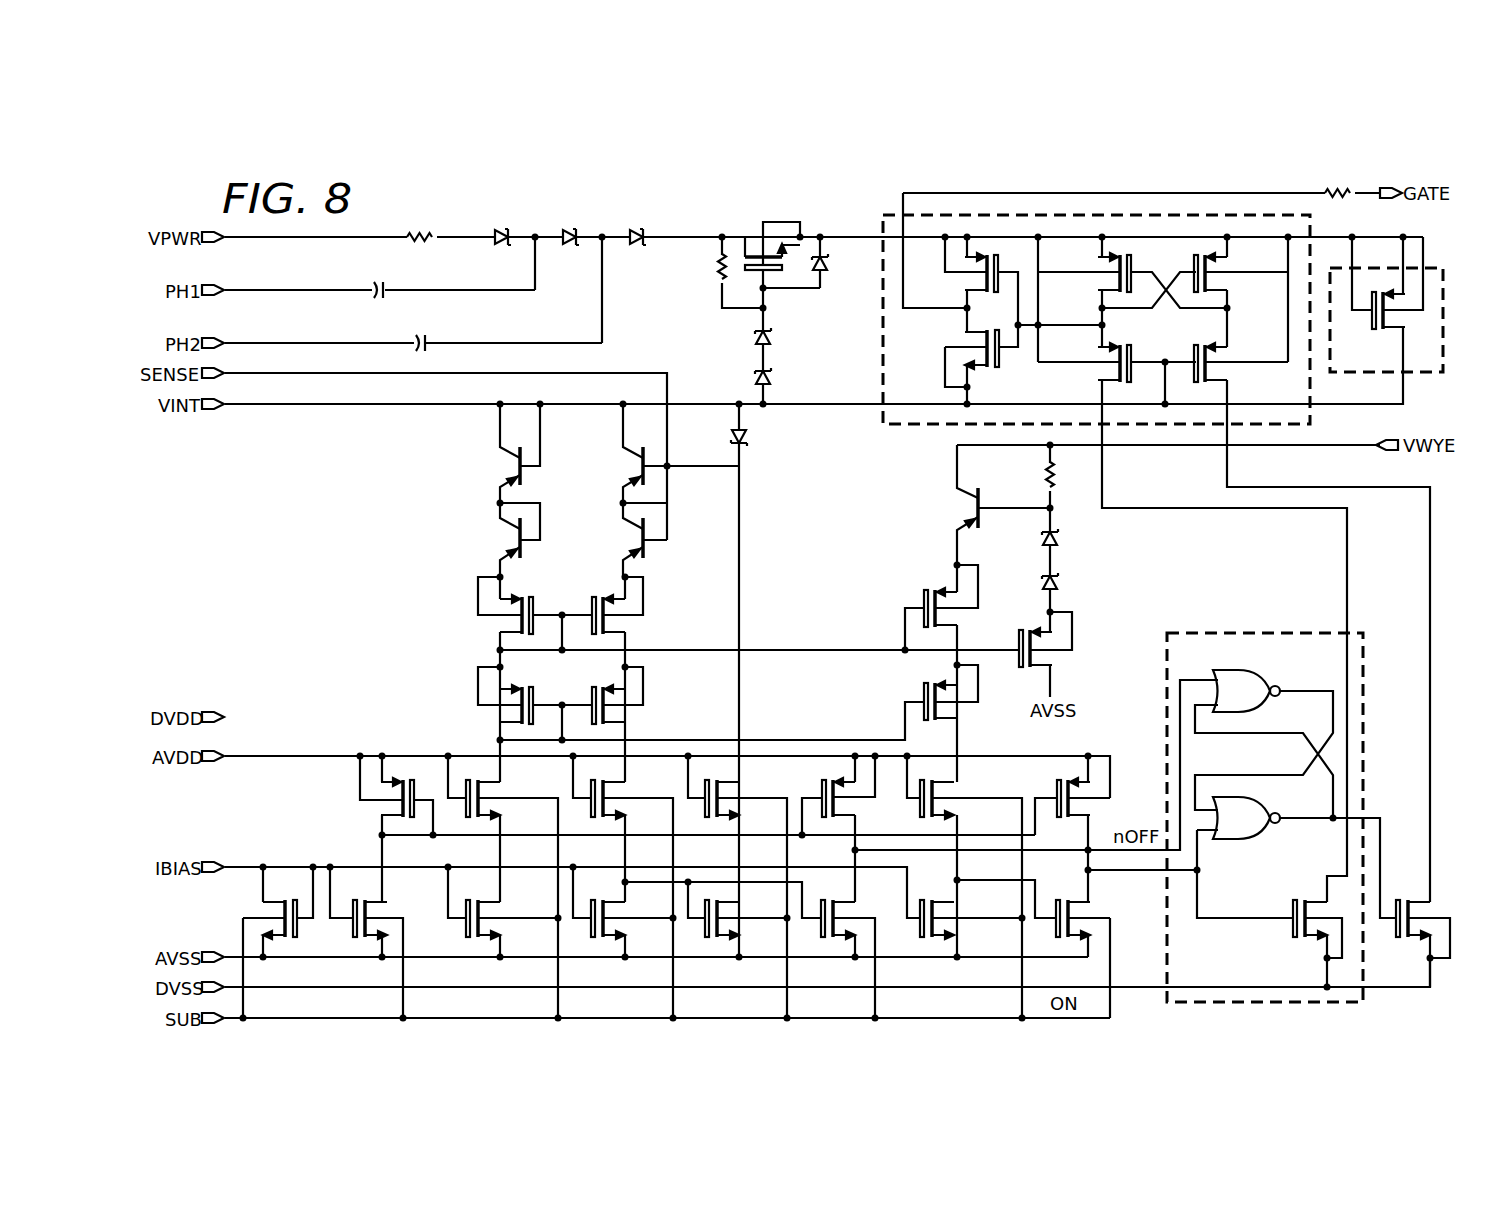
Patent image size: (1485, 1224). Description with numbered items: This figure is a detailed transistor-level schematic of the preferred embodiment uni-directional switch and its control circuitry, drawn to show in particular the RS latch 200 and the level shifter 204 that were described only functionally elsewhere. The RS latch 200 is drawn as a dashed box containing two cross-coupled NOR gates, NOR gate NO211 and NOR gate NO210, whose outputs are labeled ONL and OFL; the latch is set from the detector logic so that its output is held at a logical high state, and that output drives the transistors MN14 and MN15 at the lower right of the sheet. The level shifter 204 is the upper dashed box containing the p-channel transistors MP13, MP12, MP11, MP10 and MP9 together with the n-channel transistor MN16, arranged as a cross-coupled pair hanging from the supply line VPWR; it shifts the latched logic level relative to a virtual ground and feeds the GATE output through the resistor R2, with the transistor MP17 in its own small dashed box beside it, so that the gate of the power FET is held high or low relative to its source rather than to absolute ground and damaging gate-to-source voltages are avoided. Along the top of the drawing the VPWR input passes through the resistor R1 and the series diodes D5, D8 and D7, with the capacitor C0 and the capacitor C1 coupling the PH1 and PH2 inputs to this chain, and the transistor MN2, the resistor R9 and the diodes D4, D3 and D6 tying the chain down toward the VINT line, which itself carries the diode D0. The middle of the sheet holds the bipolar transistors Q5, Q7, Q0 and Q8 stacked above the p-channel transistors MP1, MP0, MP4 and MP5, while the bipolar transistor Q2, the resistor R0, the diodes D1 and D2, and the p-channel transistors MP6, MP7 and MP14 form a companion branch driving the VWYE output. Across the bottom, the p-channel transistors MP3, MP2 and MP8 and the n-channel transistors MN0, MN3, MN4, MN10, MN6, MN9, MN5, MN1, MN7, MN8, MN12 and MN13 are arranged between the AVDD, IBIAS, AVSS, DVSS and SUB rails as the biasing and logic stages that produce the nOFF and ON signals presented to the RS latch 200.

The RS latch 200 is at (1308, 794).
The level shifter 204 is at (1062, 308).
The transistor MP17 is at (1386, 304).
The transistor MN2 is at (772, 243).
The resistor R1 is at (420, 225).
The resistor R2 is at (1339, 207).
The resistor R9 is at (708, 270).
The resistor R0 is at (1065, 474).
The capacitor C0 is at (378, 279).
The capacitor C1 is at (422, 332).
The diode D0 is at (754, 438).
The diode D1 is at (1066, 538).
The diode D2 is at (1066, 583).
The diode D3 is at (779, 338).
The diode D4 is at (834, 263).
The diode D5 is at (502, 225).
The diode D6 is at (779, 378).
The diode D7 is at (637, 225).
The diode D8 is at (569, 225).
The transistor Q0 is at (633, 453).
The transistor Q2 is at (992, 505).
The transistor Q5 is at (509, 453).
The transistor Q7 is at (509, 540).
The transistor Q8 is at (633, 540).
The transistor MP0 is at (631, 607).
The transistor MP1 is at (495, 607).
The transistor MP2 is at (850, 795).
The transistor MP3 is at (386, 795).
The transistor MP4 is at (495, 697).
The transistor MP5 is at (631, 697).
The transistor MP6 is at (962, 598).
The transistor MP7 is at (962, 694).
The transistor MP8 is at (1081, 795).
The transistor MP9 is at (1231, 365).
The transistor MP10 is at (1091, 365).
The transistor MP11 is at (1236, 271).
The transistor MP12 is at (1091, 271).
The transistor MP13 is at (956, 276).
The transistor MP14 is at (1063, 654).
The transistor MN0 is at (503, 887).
The transistor MN1 is at (623, 912).
The transistor MN3 is at (623, 887).
The transistor MN4 is at (737, 887).
The transistor MN5 is at (503, 912).
The transistor MN6 is at (267, 942).
The transistor MN7 is at (737, 910).
The transistor MN8 is at (860, 957).
The transistor MN9 is at (377, 942).
The transistor MN10 is at (964, 887).
The transistor MN12 is at (971, 922).
The transistor MN13 is at (1100, 926).
The transistor MN14 is at (1305, 943).
The transistor MN15 is at (1414, 943).
The transistor MN16 is at (957, 346).
The NOR gate NO210 is at (1246, 830).
The NOR gate NO211 is at (1246, 680).